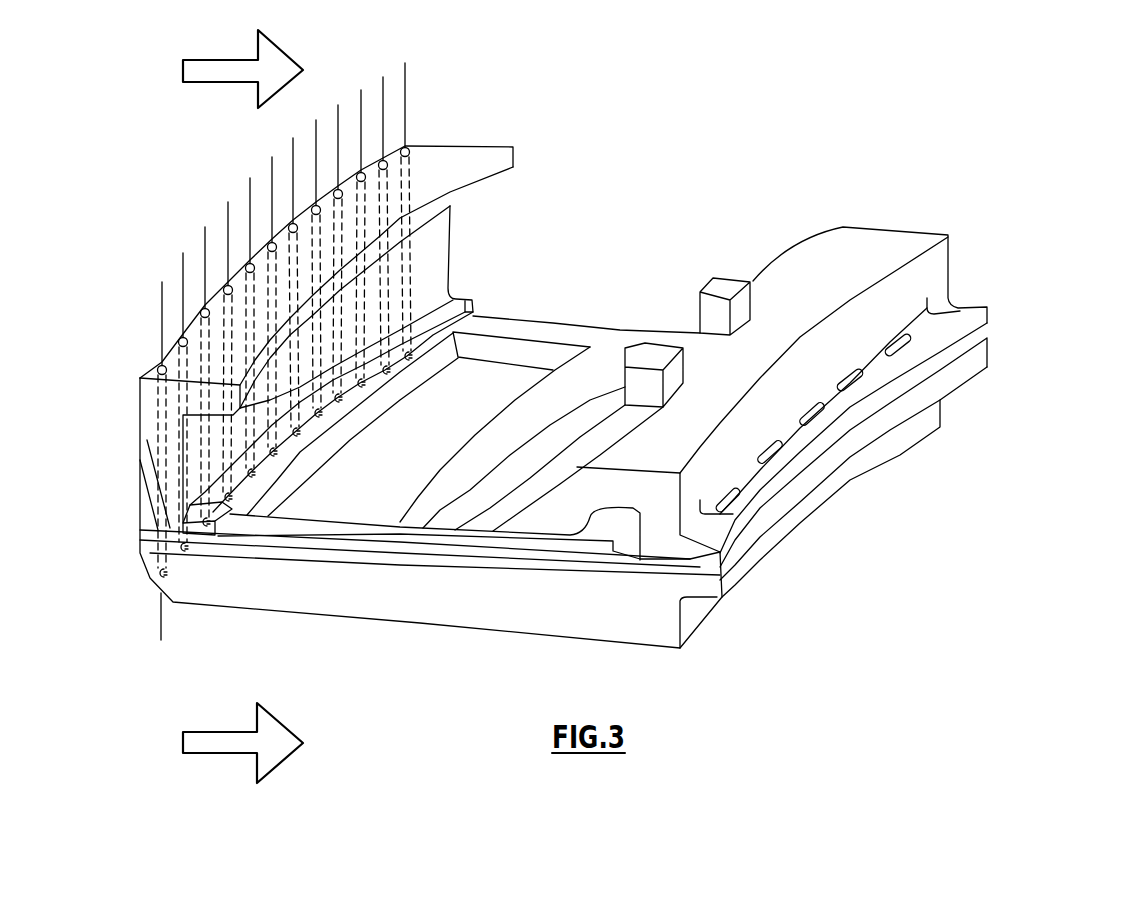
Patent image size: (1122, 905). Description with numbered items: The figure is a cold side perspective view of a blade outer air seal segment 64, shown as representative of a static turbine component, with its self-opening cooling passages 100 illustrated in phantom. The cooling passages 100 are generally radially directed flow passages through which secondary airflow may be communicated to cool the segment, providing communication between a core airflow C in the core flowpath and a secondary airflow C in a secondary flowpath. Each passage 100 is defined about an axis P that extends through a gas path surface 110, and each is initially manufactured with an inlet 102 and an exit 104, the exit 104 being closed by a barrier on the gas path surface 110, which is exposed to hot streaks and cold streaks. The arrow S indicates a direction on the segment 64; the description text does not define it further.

The BOAS segment 64 is at (1030, 186).
The self-opening cooling passages 100 is at (458, 146).
The inlet 102 is at (408, 150).
The exit 104 is at (473, 300).
The gas path surface 110 is at (220, 618).
The spanwise direction S is at (212, 82).
The core airflow / secondary airflow C is at (212, 753).
The axis P is at (161, 615).